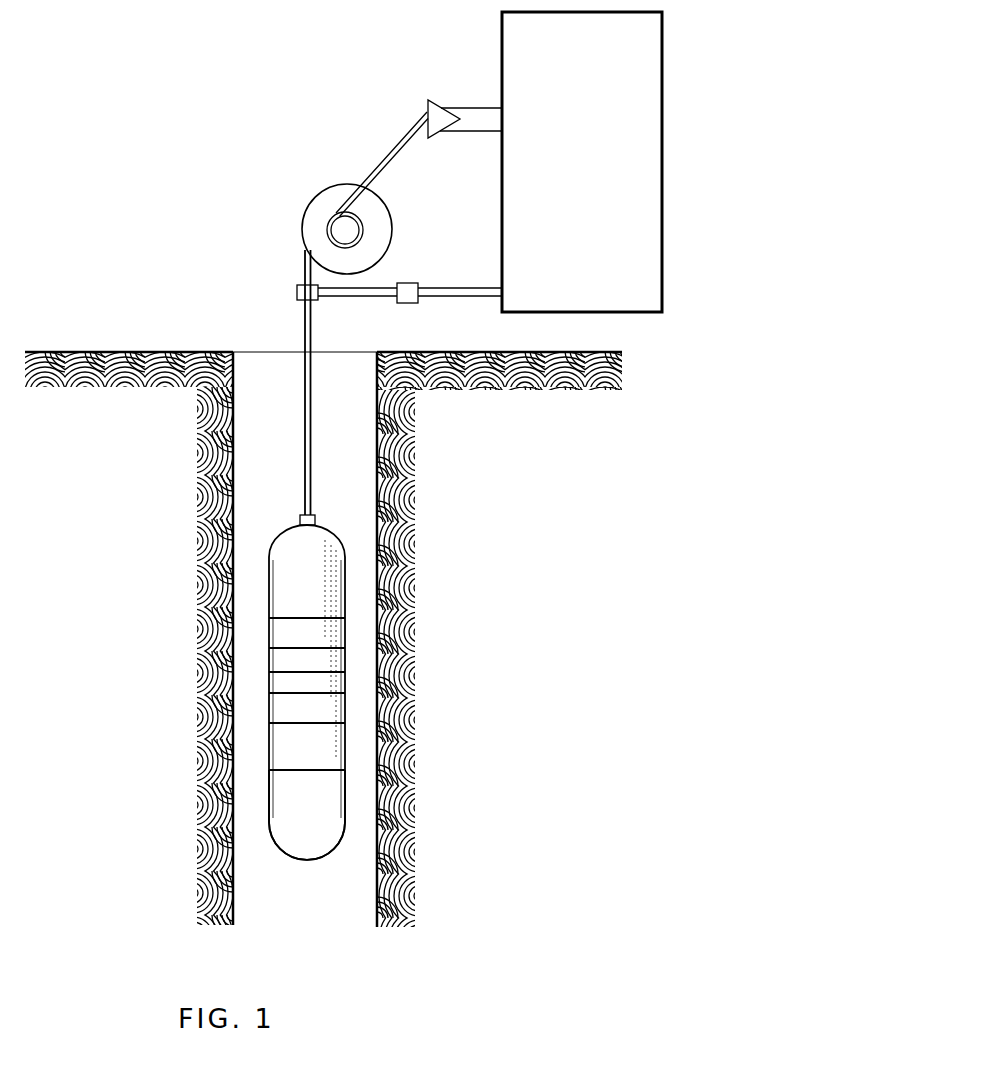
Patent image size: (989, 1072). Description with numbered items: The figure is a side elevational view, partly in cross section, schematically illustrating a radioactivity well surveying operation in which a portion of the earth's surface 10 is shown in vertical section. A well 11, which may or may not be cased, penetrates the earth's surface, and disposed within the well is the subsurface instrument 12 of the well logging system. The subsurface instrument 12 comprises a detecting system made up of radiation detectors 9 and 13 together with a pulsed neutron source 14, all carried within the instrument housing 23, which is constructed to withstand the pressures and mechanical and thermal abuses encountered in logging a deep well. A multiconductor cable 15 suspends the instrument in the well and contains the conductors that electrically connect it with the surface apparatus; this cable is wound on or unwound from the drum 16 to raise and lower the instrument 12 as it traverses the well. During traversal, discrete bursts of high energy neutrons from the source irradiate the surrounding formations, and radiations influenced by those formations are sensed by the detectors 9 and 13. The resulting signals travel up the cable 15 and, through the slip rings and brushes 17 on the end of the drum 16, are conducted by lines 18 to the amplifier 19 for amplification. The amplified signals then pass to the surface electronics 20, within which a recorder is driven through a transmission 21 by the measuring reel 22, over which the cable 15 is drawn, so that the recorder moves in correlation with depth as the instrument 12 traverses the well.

The radiation detector 9 is at (327, 681).
The earth's surface 10 is at (117, 351).
The well 11 is at (278, 380).
The subsurface instrument 12 is at (352, 590).
The radiation detector 13 is at (328, 633).
The pulsed neutron source 14 is at (323, 752).
The cable 15 is at (312, 467).
The drum 16 is at (388, 249).
The slip rings and brushes 17 is at (365, 230).
The lines 18 is at (400, 143).
The amplifier 19 is at (430, 100).
The surface electronics 20 is at (663, 78).
The transmission 21 is at (418, 303).
The measuring reel 22 is at (318, 302).
The instrument housing 23 is at (333, 813).